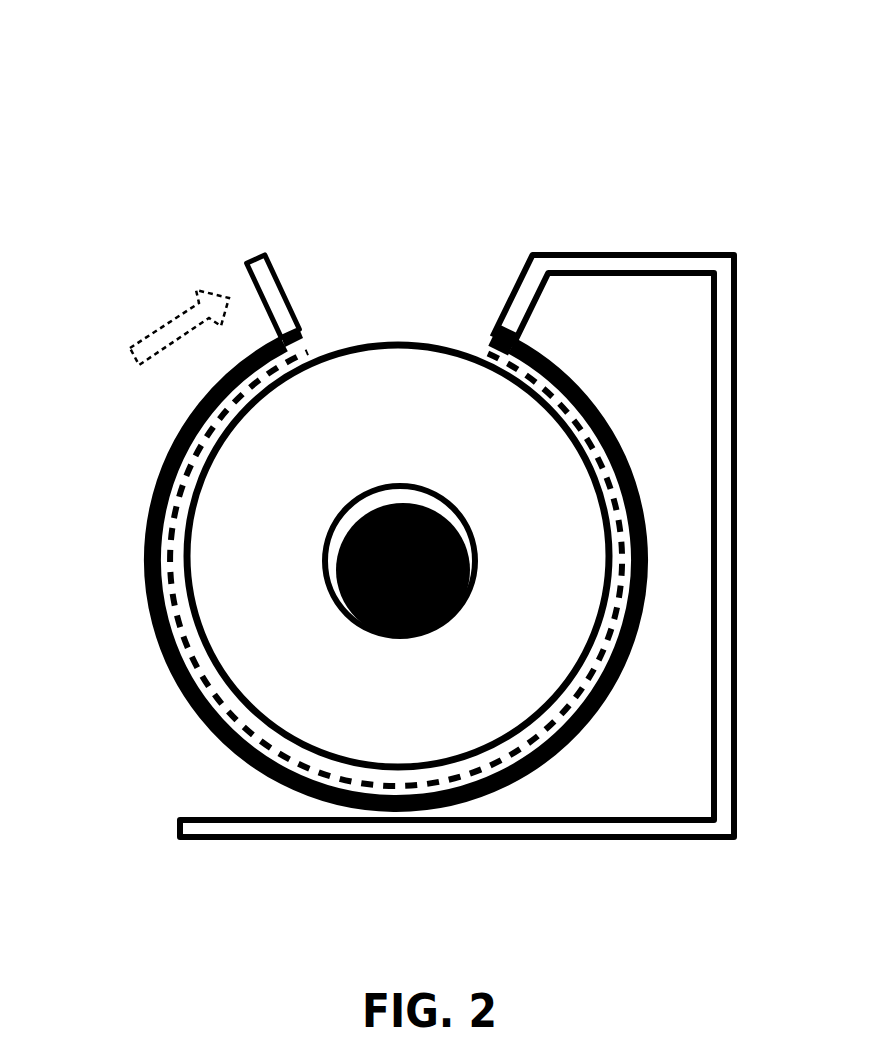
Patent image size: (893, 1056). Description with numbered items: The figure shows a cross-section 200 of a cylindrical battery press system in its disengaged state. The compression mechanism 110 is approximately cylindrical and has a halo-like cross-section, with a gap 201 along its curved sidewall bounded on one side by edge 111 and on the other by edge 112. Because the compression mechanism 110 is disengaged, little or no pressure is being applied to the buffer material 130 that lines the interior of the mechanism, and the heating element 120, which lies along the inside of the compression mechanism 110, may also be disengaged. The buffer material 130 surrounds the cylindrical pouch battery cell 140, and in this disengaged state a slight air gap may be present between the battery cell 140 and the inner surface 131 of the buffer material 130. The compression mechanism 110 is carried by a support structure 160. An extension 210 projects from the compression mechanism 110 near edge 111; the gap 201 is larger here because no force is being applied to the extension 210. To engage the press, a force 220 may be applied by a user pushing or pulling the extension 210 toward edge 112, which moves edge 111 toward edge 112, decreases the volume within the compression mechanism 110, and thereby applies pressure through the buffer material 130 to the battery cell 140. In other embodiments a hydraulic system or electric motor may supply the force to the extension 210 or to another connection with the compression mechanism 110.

The cross-section 200 is at (88, 122).
The gap 201 is at (381, 312).
The compression mechanism 110 is at (172, 436).
The edge 111 is at (302, 334).
The edge 112 is at (490, 333).
The heating element 120 is at (220, 414).
The buffer material 130 is at (254, 565).
The inner surface 131 is at (351, 500).
The cylindrical pouch battery cell 140 is at (345, 530).
The support structure 160 is at (644, 252).
The extension 210 is at (242, 256).
The force 220 is at (170, 318).